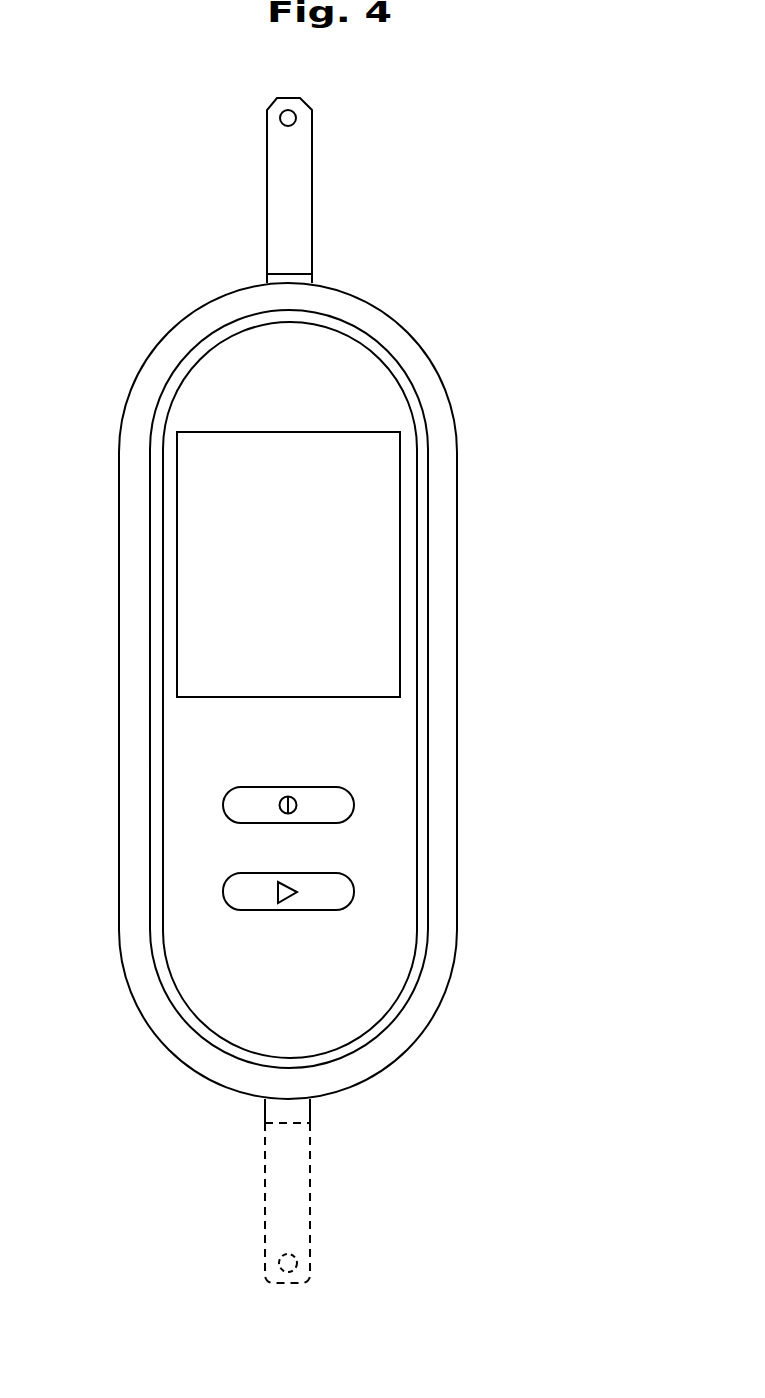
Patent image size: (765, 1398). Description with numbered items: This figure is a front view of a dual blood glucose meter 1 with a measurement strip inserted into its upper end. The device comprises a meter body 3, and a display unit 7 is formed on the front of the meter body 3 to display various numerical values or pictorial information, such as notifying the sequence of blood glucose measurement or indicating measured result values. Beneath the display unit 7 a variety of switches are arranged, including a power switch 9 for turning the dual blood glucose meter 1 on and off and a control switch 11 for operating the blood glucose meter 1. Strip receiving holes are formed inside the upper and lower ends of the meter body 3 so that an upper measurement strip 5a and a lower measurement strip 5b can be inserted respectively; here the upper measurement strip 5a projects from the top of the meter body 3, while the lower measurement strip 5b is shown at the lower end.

The dual blood glucose meter 1 is at (530, 365).
The meter body 3 is at (440, 607).
The upper measurement strip 5a is at (288, 192).
The lower measurement strip 5b is at (290, 1190).
The display unit 7 is at (203, 573).
The power switch 9 is at (329, 809).
The control switch 11 is at (329, 895).